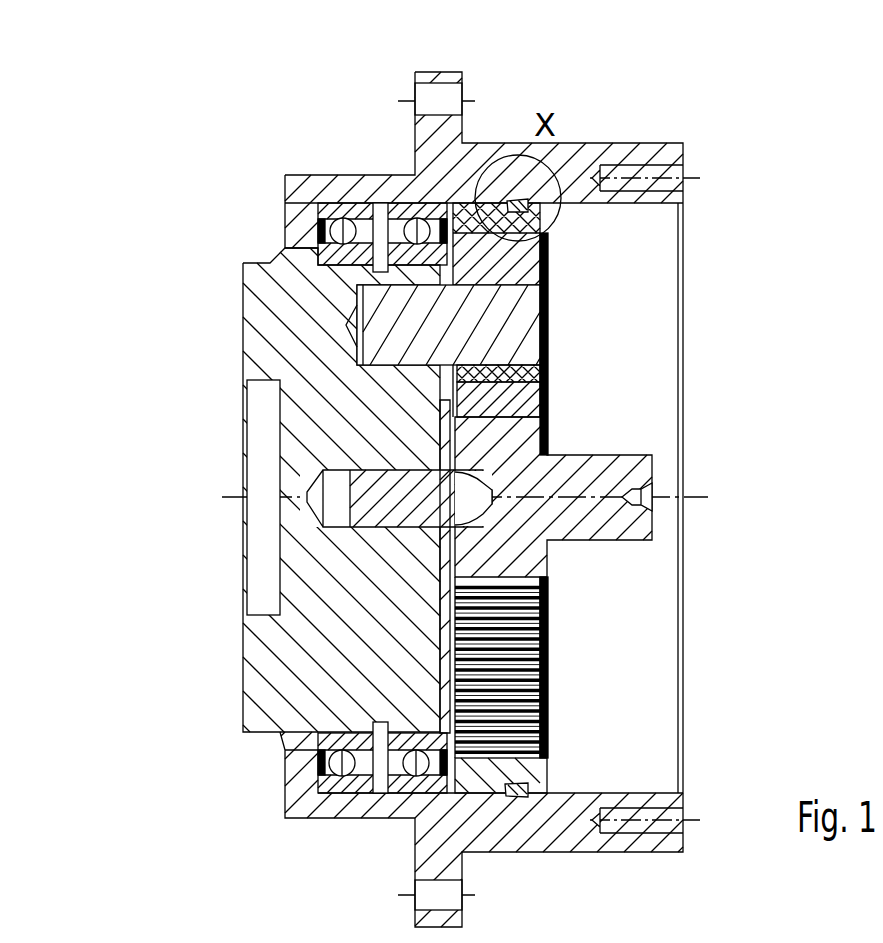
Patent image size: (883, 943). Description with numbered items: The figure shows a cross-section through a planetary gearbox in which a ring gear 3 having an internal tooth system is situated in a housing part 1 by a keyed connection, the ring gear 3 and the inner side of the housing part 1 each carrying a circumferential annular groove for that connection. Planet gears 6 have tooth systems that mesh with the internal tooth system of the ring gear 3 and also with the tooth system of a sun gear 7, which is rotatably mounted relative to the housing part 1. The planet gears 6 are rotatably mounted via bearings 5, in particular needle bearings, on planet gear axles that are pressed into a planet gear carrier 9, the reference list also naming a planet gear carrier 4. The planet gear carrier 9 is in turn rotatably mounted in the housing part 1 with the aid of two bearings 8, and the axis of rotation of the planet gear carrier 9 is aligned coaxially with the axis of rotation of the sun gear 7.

The housing part 1 is at (578, 178).
The ring gear 3 is at (525, 223).
The planet gear carrier 4 is at (510, 340).
The bearing 5 is at (517, 374).
The planet gear 6 is at (513, 397).
The sun gear 7 is at (523, 452).
The bearing 8 is at (342, 763).
The planet gear carrier 9 is at (273, 677).